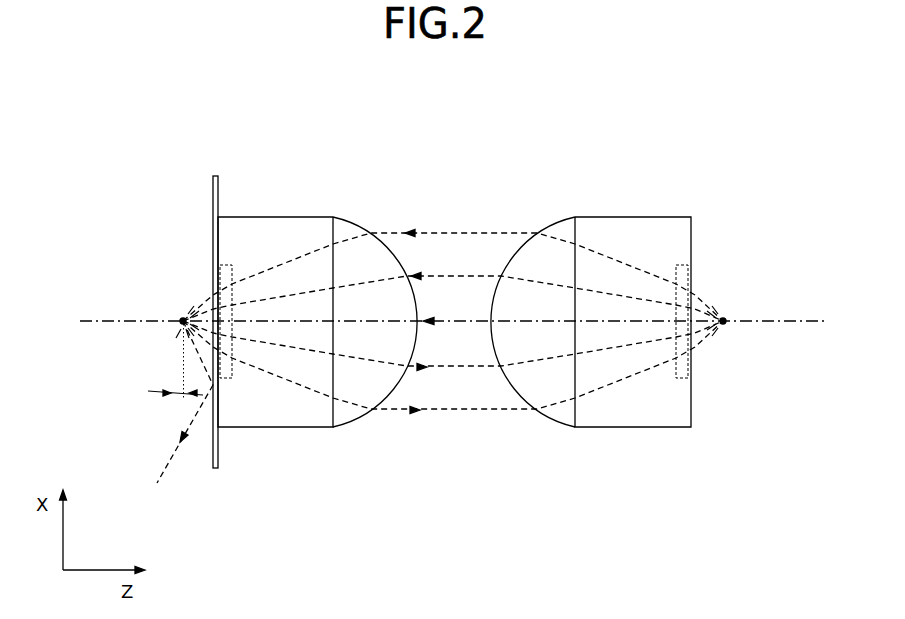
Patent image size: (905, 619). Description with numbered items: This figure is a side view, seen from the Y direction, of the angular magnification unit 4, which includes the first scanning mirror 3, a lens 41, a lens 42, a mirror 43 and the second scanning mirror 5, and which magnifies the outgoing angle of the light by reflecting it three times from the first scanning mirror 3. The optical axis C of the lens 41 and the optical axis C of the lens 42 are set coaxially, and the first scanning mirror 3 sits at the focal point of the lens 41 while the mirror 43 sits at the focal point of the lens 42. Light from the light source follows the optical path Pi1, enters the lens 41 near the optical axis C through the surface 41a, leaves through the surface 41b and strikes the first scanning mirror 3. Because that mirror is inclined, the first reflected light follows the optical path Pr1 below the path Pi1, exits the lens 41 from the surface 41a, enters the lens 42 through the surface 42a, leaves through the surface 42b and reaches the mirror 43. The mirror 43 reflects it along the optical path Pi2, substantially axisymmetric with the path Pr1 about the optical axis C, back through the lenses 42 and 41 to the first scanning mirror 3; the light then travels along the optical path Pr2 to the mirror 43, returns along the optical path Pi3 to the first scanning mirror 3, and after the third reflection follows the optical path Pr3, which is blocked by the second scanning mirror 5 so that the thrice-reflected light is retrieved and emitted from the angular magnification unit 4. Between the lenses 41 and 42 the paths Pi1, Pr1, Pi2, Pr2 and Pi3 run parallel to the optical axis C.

The first scanning mirror 3 is at (184, 318).
The angular magnification unit 4 is at (464, 136).
The second scanning mirror 5 is at (214, 176).
The lens 41 is at (297, 208).
The surface 41a is at (356, 224).
The surface 41b is at (221, 280).
The lens 42 is at (611, 208).
The surface 42a is at (552, 224).
The surface 42b is at (690, 278).
The mirror 43 is at (724, 318).
The optical path Pi1 is at (436, 321).
The optical path Pi2 is at (426, 276).
The optical path Pi3 is at (420, 233).
The optical path Pr1 is at (430, 367).
The optical path Pr2 is at (424, 410).
The optical path Pr3 is at (165, 468).
The optical axis C is at (796, 320).